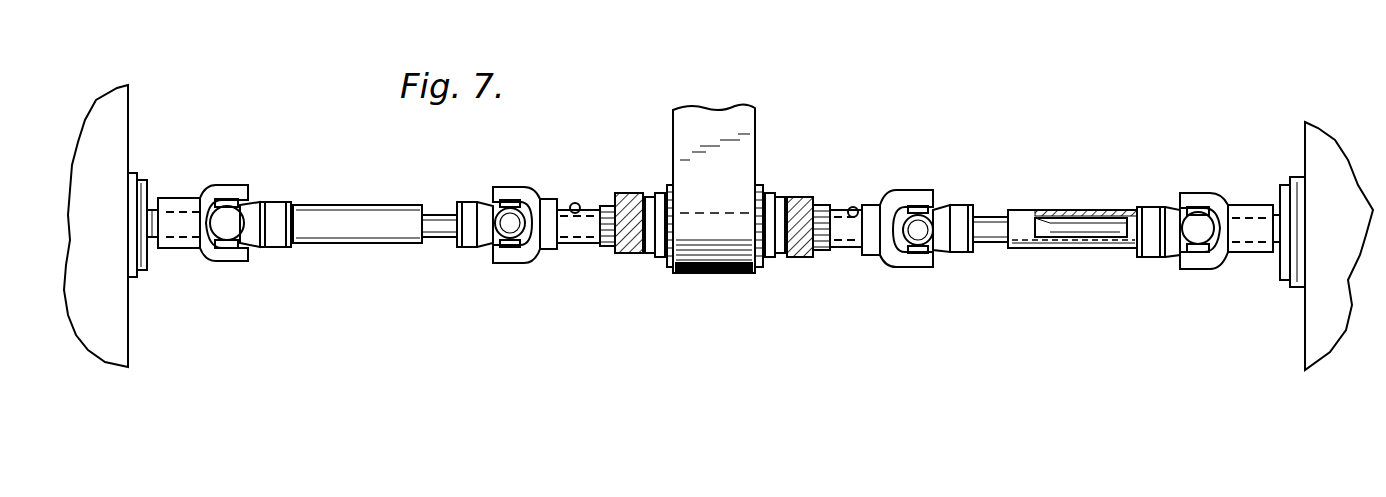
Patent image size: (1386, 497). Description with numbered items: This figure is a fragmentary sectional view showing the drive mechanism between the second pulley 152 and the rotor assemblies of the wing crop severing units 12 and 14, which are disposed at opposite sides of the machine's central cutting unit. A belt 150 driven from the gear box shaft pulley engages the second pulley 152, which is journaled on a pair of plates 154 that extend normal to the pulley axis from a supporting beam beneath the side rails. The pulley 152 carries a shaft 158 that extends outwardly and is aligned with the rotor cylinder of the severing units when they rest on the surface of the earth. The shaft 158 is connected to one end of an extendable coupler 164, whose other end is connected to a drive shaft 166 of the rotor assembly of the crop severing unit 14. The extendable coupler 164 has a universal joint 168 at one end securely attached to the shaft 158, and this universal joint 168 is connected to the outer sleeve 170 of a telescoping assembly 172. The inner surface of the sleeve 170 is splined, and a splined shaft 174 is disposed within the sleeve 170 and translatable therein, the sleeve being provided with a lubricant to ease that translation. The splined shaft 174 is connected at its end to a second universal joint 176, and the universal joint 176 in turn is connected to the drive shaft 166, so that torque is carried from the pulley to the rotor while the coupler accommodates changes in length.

The wing crop severing unit 12 is at (1320, 239).
The wing crop severing unit 14 is at (82, 214).
The belt 150 is at (716, 120).
The second pulley 152 is at (762, 190).
The plates 154 is at (626, 192).
The shaft 158 is at (728, 278).
The extendable coupler 164 is at (1153, 193).
The drive shaft 166 is at (152, 207).
The universal joint 168 is at (233, 184).
The outer sleeve 170 is at (1058, 248).
The telescoping assembly 172 is at (358, 203).
The splined shaft 174 is at (1094, 218).
The second universal joint 176 is at (512, 185).